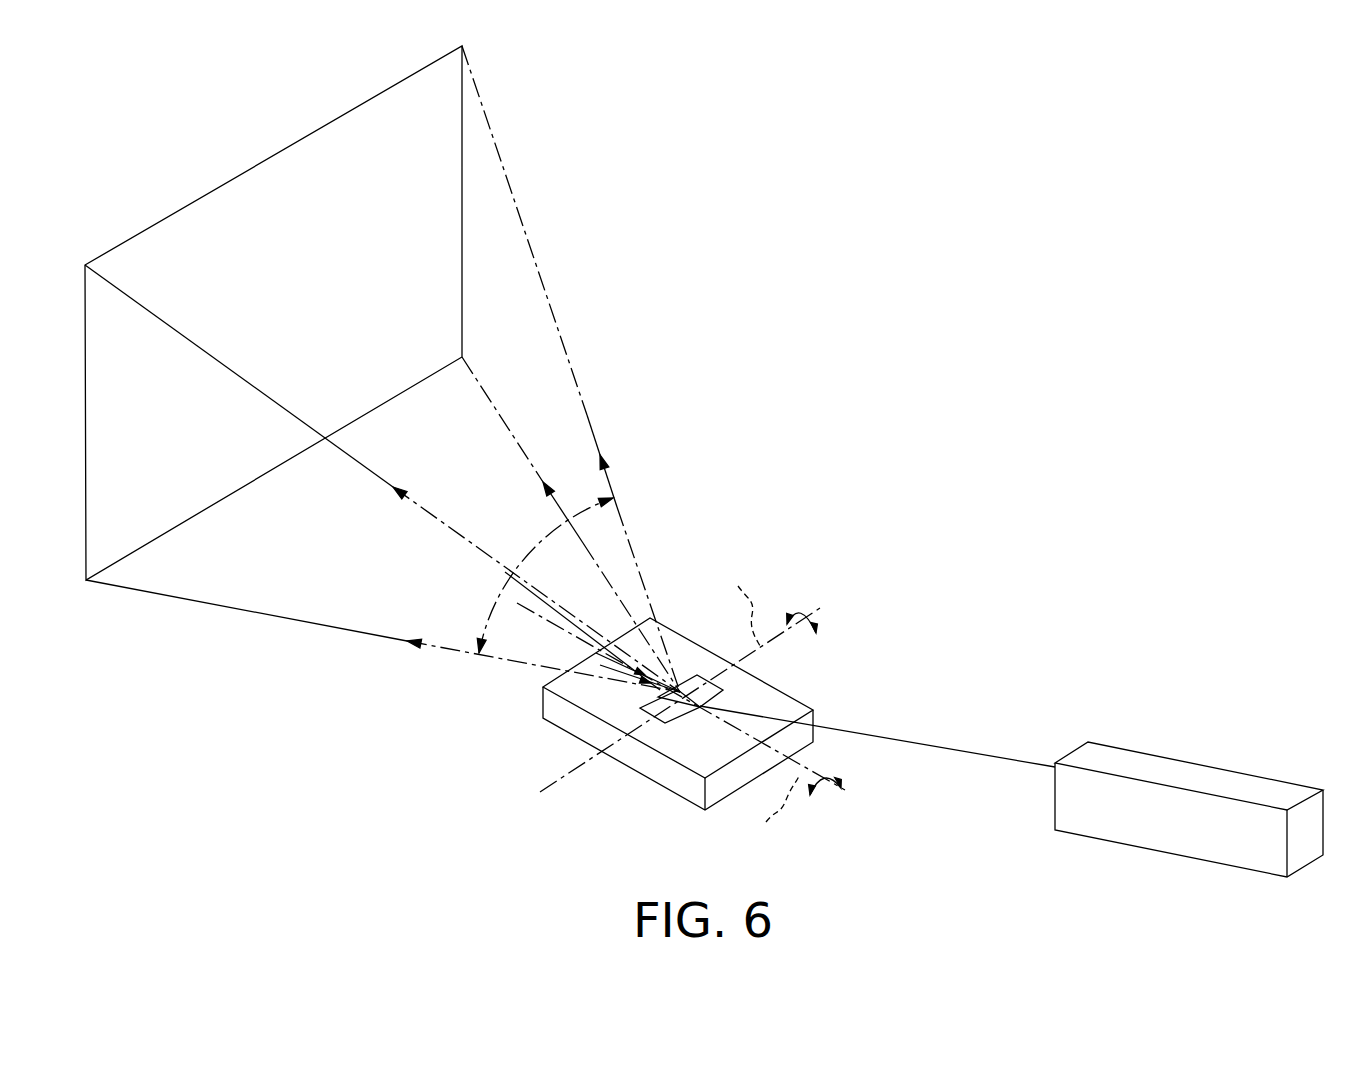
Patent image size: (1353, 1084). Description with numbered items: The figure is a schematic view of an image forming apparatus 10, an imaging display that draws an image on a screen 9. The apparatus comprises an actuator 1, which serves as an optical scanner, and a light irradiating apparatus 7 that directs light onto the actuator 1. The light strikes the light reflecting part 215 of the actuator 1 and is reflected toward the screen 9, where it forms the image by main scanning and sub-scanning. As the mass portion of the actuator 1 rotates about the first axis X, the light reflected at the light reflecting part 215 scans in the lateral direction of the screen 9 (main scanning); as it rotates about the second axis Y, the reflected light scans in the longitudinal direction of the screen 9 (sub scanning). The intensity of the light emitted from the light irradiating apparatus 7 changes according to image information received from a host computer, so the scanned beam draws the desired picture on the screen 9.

The screen 9 is at (224, 184).
The image forming apparatus 10 is at (1008, 531).
The actuator 1 is at (784, 687).
The light reflecting part 215 is at (664, 716).
The light irradiating apparatus 7 is at (1190, 776).